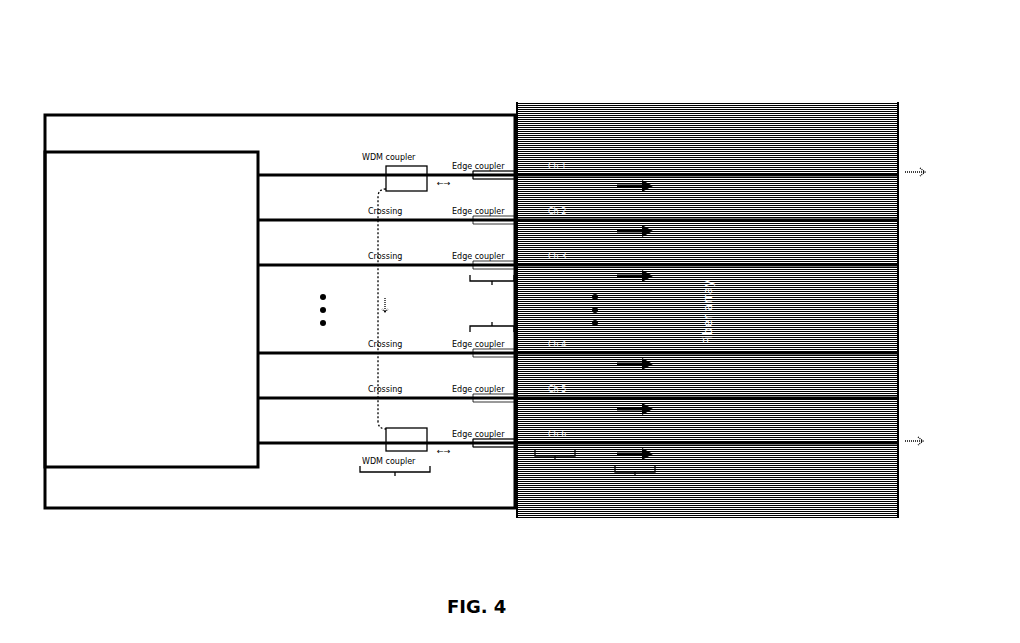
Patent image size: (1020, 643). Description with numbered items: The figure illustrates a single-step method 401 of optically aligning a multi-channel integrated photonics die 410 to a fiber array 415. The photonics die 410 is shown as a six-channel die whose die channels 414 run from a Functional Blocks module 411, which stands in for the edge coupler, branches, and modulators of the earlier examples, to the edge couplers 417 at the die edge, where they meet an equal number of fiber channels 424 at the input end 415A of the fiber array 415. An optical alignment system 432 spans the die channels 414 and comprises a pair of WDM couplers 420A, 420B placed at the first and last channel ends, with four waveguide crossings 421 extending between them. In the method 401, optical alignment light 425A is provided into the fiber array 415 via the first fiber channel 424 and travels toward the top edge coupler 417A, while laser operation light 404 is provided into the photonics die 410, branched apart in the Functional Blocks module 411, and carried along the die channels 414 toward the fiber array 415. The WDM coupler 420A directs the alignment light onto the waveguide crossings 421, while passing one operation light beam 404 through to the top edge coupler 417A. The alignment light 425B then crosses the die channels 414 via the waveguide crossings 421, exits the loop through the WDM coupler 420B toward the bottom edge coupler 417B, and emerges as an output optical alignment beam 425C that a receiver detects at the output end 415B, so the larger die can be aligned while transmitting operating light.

The single-step method of optically aligning 401 is at (152, 71).
The laser operation light 404 is at (635, 485).
The multi-channel integrated photonics die 410 is at (280, 311).
The Functional Blocks module 411 is at (151, 309).
The die channels 414 is at (318, 174).
The fiber array 415 is at (800, 310).
The input end of the fiber array 415A is at (512, 90).
The output end of the fiber array 415B is at (889, 88).
The edge couplers 417 is at (492, 303).
The top edge coupler 417A is at (520, 176).
The bottom edge coupler 417B is at (497, 447).
The first WDM coupler 420A is at (421, 166).
The second WDM coupler 420B is at (386, 438).
The waveguide crossings 421 is at (381, 281).
The fiber channels 424 is at (555, 466).
The optical alignment light 425A is at (920, 176).
The optical alignment light on waveguide crossings 425B is at (388, 316).
The output optical alignment beam 425C is at (912, 446).
The optical alignment system 432 is at (395, 481).